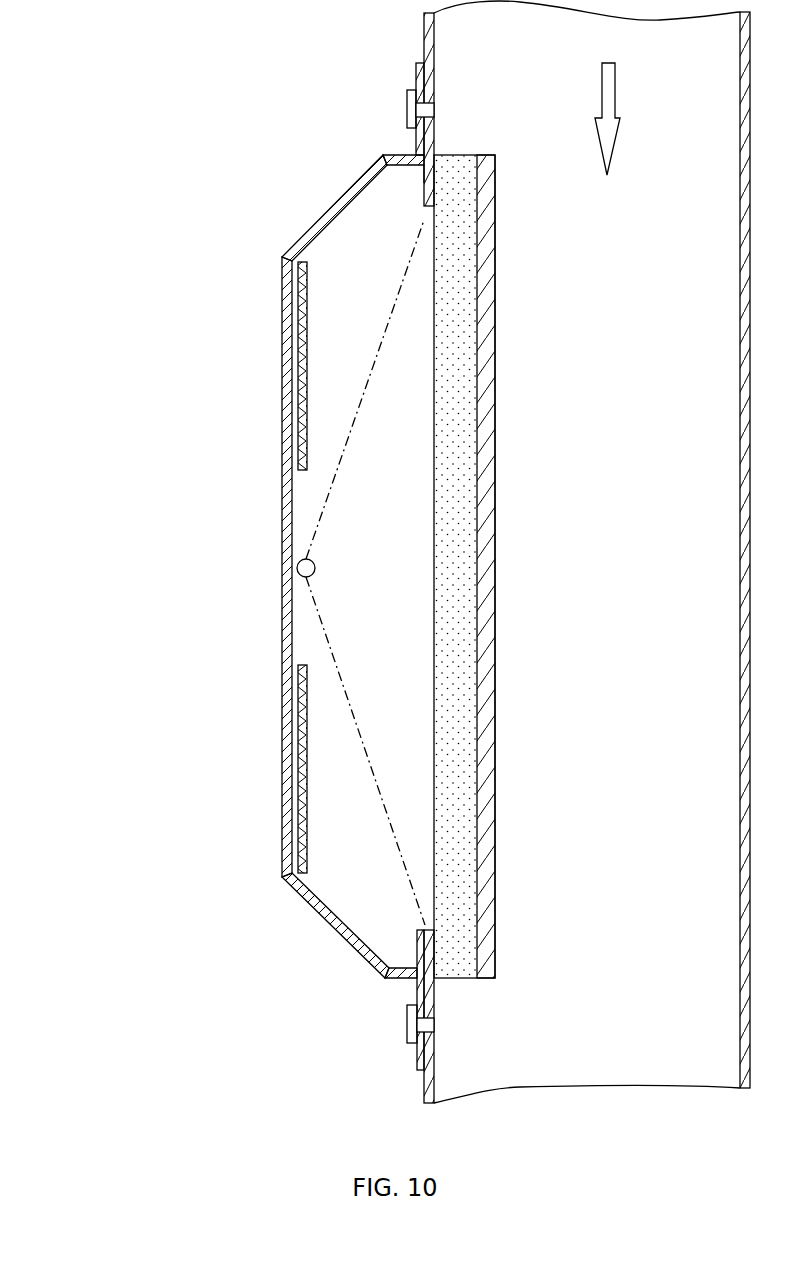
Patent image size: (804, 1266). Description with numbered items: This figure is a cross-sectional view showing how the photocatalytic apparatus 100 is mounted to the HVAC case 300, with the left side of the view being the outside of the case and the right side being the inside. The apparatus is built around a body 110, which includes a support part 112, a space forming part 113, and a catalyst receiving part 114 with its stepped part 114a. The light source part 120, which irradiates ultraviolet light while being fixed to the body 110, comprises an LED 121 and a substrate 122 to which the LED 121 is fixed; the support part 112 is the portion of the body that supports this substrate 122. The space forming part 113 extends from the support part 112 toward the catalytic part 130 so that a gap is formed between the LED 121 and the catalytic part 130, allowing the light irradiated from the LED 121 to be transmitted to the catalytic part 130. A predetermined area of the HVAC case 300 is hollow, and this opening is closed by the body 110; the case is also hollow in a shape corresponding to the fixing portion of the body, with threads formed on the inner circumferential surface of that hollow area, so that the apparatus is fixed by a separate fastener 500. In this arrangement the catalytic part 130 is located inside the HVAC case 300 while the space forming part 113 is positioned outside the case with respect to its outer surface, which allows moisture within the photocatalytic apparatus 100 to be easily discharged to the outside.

The photocatalytic apparatus 100 is at (122, 458).
The body 110 is at (300, 63).
The support part 112 is at (283, 270).
The space forming part 113 is at (321, 222).
The catalyst receiving part 114 is at (416, 150).
The stepped part 114a is at (425, 183).
The light source part 120 is at (220, 558).
The LED 121 is at (297, 566).
The substrate 122 is at (283, 668).
The catalytic part 130 is at (457, 570).
The HVAC case 300 is at (424, 1088).
The fastener 500 is at (406, 1023).